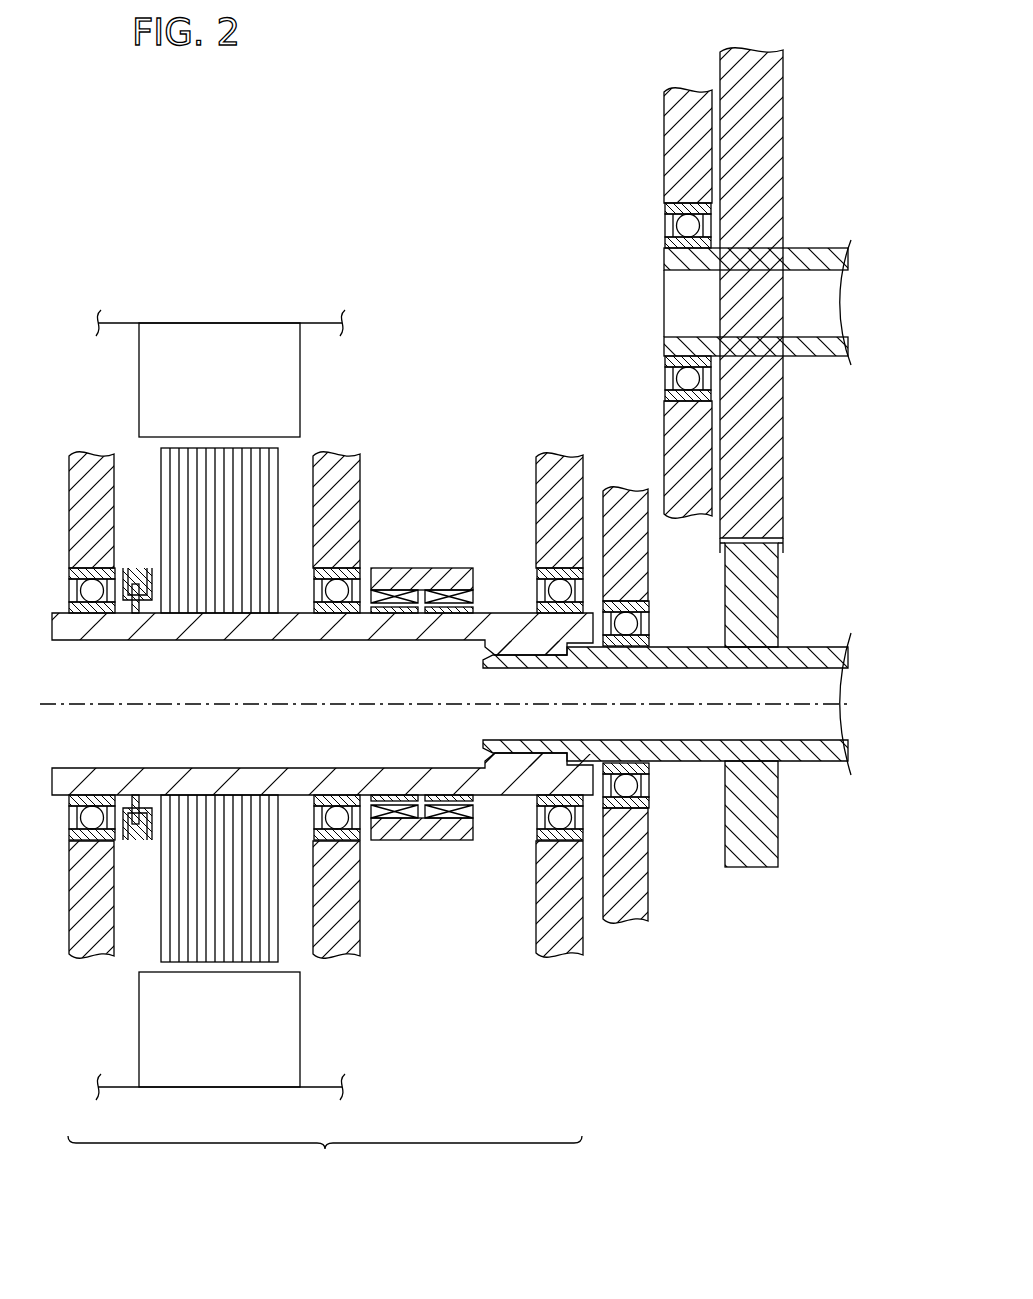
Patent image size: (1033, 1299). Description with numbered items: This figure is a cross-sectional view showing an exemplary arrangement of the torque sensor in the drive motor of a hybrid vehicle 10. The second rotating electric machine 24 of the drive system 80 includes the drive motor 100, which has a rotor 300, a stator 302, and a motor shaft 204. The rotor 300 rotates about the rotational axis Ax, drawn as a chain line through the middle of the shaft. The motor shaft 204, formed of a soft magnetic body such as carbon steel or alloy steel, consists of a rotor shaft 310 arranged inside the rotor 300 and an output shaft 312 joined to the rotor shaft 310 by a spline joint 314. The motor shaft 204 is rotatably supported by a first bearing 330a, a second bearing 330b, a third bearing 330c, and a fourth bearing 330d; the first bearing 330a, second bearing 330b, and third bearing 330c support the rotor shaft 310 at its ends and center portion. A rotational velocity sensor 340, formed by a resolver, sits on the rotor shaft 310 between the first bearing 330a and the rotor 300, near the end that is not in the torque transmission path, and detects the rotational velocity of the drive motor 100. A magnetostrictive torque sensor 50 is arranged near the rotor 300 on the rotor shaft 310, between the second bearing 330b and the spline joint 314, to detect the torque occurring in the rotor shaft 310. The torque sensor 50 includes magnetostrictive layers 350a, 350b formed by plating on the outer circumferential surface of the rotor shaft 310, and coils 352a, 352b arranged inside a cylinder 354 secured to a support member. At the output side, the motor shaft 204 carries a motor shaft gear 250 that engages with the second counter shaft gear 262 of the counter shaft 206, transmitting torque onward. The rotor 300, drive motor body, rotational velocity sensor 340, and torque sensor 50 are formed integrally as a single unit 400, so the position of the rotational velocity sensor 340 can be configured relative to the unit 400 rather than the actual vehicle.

The vehicle 10 is at (270, 121).
The drive system 80 is at (284, 220).
The second rotating electric machine 24 is at (119, 357).
The stator 302 is at (303, 370).
The rotor 300 is at (229, 447).
The rotational velocity sensor 340 is at (131, 567).
The first bearing 330a is at (103, 612).
The second bearing 330b is at (334, 610).
The third bearing 330c is at (553, 588).
The fourth bearing 330d is at (620, 617).
The magnetostrictive torque sensor 50 is at (421, 551).
The spline joint 314 is at (508, 648).
The rotational axis Ax is at (78, 708).
The magnetostrictive layer 350a is at (397, 792).
The magnetostrictive layer 350b is at (452, 792).
The coil 352a is at (398, 823).
The coil 352b is at (455, 822).
The cylinder 354 is at (427, 830).
The rotor shaft 310 is at (552, 780).
The output shaft 312 is at (630, 773).
The motor shaft 204 is at (543, 1010).
The counter shaft 206 is at (806, 358).
The second counter shaft gear 262 is at (785, 464).
The motor shaft gear 250 is at (771, 627).
The drive motor 100 is at (68, 1136).
The unit 400 is at (325, 1142).